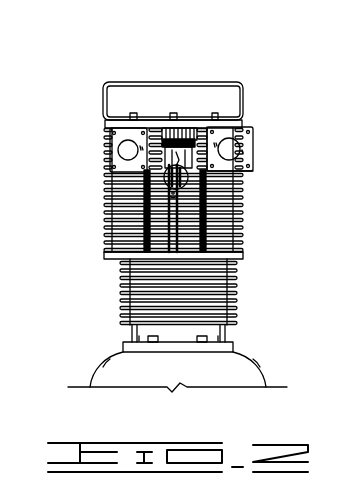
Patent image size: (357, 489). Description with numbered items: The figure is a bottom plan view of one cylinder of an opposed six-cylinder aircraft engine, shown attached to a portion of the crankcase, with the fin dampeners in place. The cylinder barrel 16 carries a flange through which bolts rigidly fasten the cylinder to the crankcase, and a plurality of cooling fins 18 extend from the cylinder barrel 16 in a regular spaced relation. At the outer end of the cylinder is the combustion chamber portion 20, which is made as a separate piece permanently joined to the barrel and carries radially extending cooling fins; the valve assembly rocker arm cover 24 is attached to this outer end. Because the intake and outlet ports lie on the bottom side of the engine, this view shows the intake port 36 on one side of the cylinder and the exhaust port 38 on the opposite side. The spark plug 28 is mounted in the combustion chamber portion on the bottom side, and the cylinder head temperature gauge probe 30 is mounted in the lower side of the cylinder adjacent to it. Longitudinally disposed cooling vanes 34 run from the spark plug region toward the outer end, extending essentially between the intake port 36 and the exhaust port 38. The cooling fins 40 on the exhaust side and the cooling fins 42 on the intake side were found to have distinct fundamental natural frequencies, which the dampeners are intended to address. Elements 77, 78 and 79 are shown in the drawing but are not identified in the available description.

The cylinder barrel 16 is at (217, 333).
The cooling fins 18 is at (233, 287).
The combustion chamber portion 20 is at (208, 167).
The valve assembly rocker arm cover 24 is at (107, 83).
The spark plug 28 is at (206, 132).
The cylinder head temperature gauge probe 30 is at (112, 197).
The longitudinally disposed cooling vanes 34 is at (168, 130).
The intake port 36 is at (241, 148).
The exhaust port 38 is at (112, 145).
The cooling fins on the exhaust side 40 is at (107, 228).
The cooling fins on the intake side 42 is at (237, 237).
The cooling fins 77 is at (187, 130).
The connecting rod 78 is at (169, 196).
The cylinder flange 79 is at (107, 252).